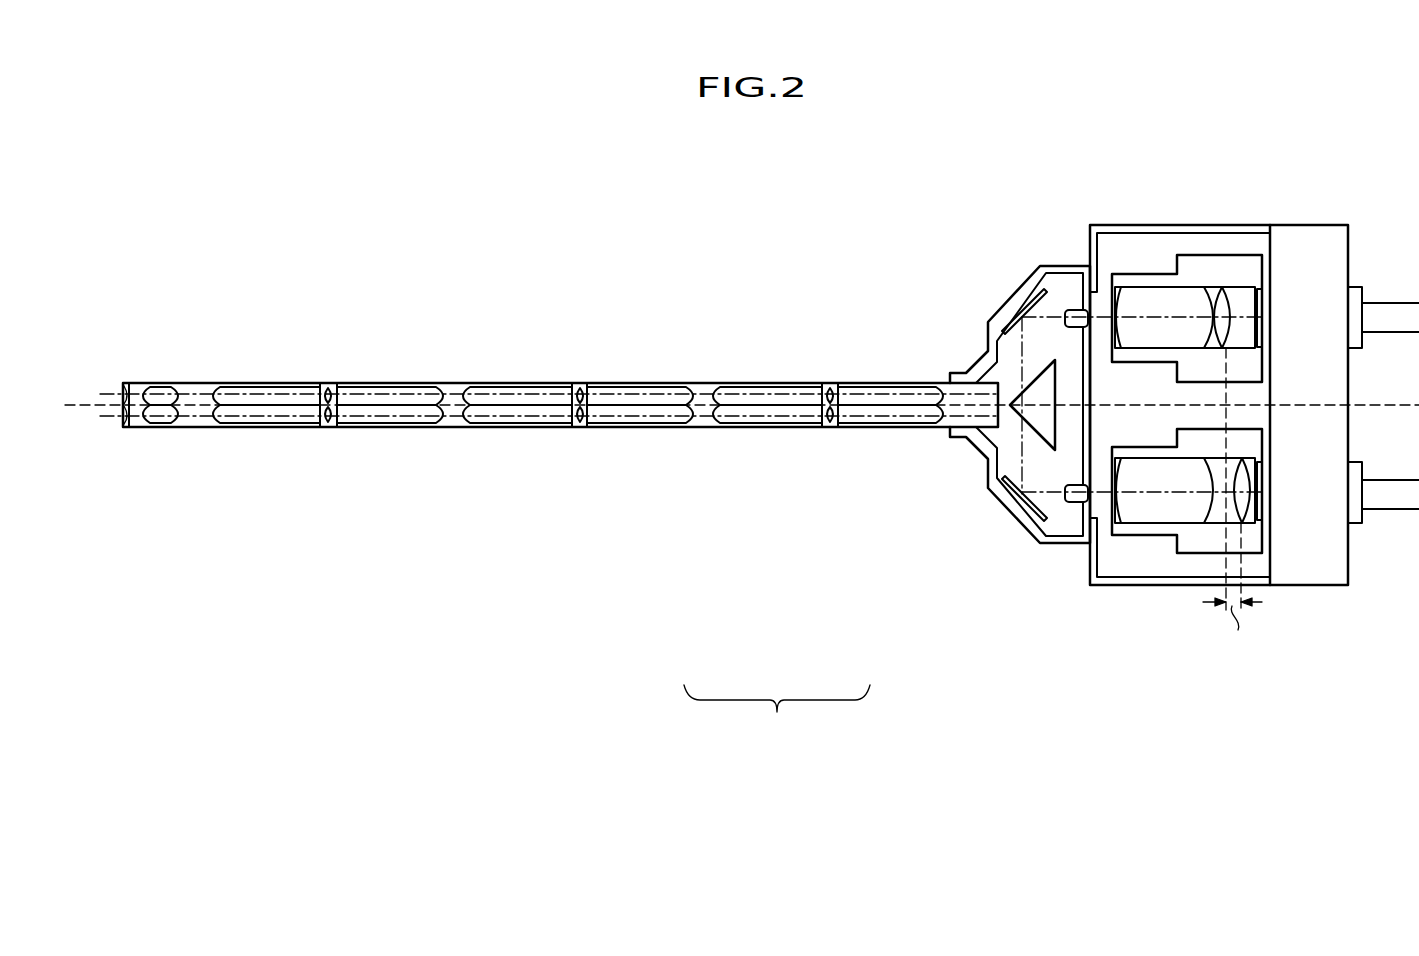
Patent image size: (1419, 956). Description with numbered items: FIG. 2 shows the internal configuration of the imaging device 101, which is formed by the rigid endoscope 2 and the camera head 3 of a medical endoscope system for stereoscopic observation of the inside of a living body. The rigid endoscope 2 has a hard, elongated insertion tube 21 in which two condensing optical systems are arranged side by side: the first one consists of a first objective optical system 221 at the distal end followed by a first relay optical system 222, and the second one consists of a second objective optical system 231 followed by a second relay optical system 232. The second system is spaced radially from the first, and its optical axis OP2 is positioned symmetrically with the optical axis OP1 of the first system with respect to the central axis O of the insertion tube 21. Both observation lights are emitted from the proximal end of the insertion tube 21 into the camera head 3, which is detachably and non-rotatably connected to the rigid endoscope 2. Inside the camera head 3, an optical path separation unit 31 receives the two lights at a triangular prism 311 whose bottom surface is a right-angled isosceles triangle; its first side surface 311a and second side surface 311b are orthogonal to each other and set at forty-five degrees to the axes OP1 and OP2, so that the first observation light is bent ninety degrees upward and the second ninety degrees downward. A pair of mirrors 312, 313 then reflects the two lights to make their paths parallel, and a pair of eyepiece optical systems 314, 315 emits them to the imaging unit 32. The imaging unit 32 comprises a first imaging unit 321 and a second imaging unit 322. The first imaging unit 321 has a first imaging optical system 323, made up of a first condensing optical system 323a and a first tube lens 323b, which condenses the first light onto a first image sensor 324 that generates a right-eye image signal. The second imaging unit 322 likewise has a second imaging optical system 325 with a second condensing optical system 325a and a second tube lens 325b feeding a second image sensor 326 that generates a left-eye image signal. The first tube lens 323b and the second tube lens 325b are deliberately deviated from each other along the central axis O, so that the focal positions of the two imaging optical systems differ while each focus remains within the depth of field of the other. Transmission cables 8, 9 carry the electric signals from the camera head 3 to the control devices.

The imaging device 101 is at (777, 718).
The rigid endoscope 2 is at (549, 491).
The camera head 3 is at (1130, 413).
The central axis O is at (93, 403).
The optical axis of the first condensing optical system OP1 is at (277, 392).
The optical axis of the second condensing optical system OP2 is at (277, 418).
The insertion tube 21 is at (141, 383).
The first objective optical system 221 is at (163, 383).
The first relay optical system 222 is at (325, 383).
The second objective optical system 231 is at (163, 427).
The second relay optical system 232 is at (325, 427).
The optical path separation unit 31 is at (1052, 265).
The triangular prism 311 is at (1058, 382).
The first side surface 311a is at (1054, 369).
The second side surface 311b is at (1050, 447).
The mirror 312 is at (1031, 287).
The mirror 313 is at (1030, 535).
The eyepiece optical system 314 is at (1077, 308).
The eyepiece optical system 315 is at (1075, 505).
The imaging unit 32 is at (1217, 225).
The first imaging unit 321 is at (1255, 268).
The second imaging unit 322 is at (1256, 443).
The first imaging optical system 323 is at (1235, 257).
The first condensing optical system 323a is at (1146, 300).
The first tube lens 323b is at (1228, 333).
The first image sensor 324 is at (1262, 300).
The second imaging optical system 325 is at (1235, 572).
The second condensing optical system 325a is at (1142, 515).
The second tube lens 325b is at (1242, 478).
The second image sensor 326 is at (1260, 506).
The transmission cable 8 is at (1396, 310).
The transmission cable 9 is at (1396, 488).